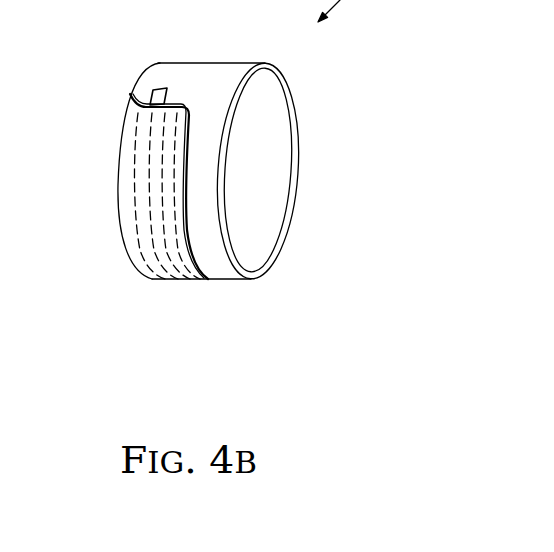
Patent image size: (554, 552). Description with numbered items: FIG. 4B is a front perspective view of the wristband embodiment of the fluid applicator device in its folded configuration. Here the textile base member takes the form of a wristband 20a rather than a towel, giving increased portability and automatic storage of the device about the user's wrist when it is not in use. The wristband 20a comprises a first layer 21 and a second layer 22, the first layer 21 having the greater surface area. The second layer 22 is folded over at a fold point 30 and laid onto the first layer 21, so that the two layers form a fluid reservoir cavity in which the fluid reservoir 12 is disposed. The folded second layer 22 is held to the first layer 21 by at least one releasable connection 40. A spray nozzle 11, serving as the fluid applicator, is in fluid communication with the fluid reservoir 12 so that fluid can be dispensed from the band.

The spray nozzle 11 is at (155, 99).
The fluid reservoir 12 is at (148, 240).
The wristband 20a is at (217, 259).
The first layer 21 is at (206, 78).
The second layer 22 is at (127, 192).
The fold point 30 is at (120, 146).
The releasable connection 40 is at (183, 268).